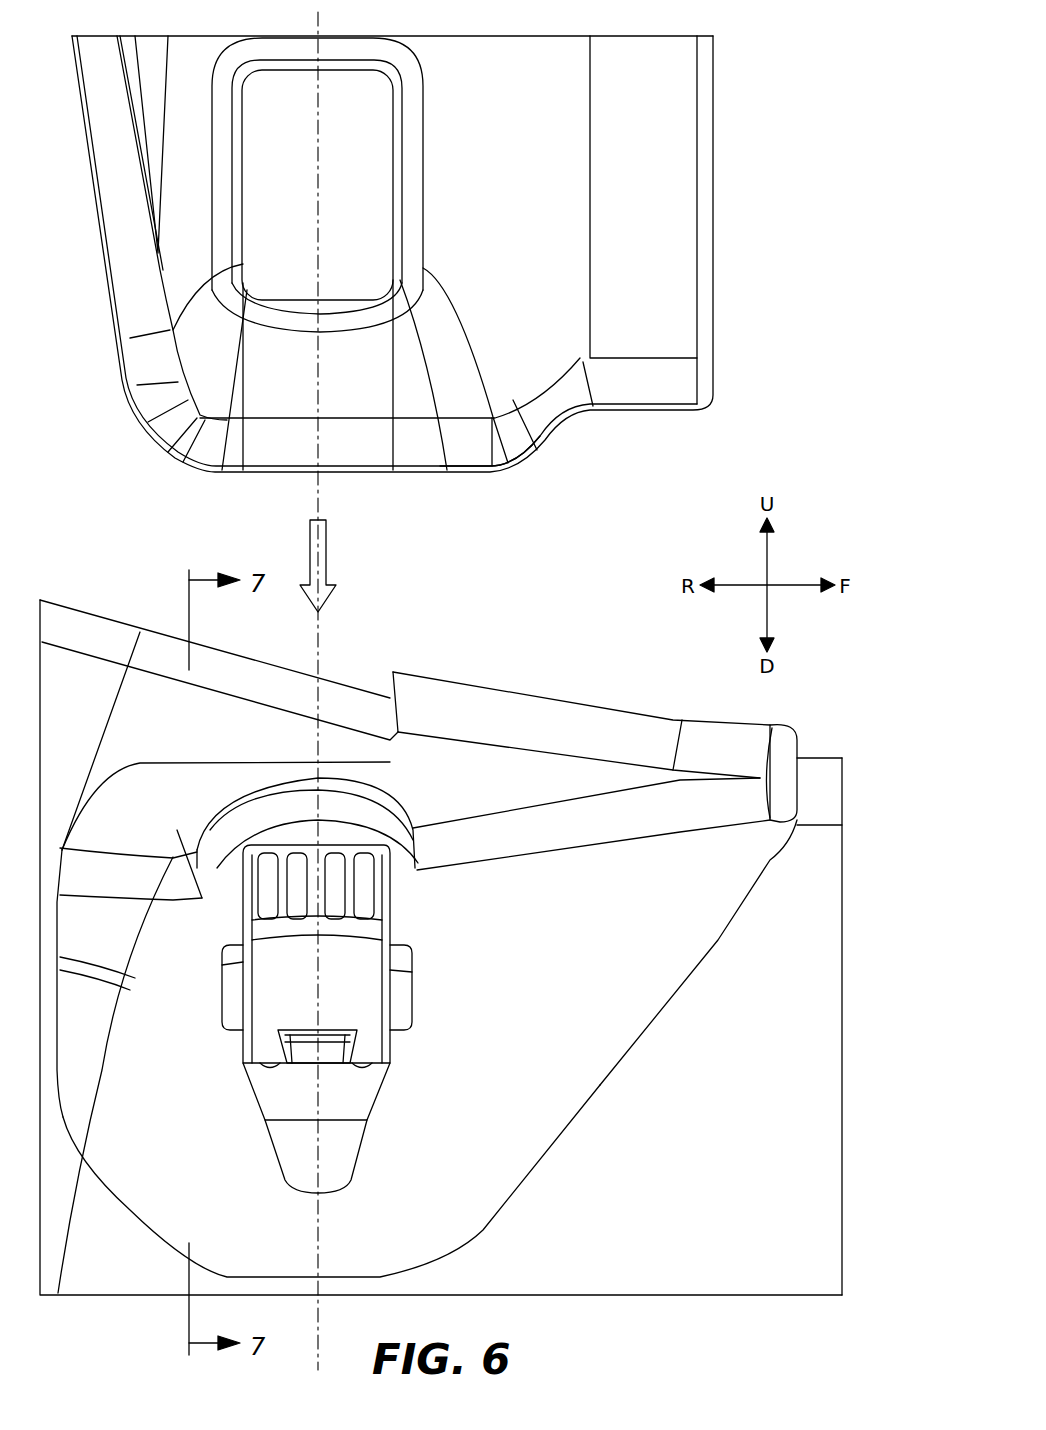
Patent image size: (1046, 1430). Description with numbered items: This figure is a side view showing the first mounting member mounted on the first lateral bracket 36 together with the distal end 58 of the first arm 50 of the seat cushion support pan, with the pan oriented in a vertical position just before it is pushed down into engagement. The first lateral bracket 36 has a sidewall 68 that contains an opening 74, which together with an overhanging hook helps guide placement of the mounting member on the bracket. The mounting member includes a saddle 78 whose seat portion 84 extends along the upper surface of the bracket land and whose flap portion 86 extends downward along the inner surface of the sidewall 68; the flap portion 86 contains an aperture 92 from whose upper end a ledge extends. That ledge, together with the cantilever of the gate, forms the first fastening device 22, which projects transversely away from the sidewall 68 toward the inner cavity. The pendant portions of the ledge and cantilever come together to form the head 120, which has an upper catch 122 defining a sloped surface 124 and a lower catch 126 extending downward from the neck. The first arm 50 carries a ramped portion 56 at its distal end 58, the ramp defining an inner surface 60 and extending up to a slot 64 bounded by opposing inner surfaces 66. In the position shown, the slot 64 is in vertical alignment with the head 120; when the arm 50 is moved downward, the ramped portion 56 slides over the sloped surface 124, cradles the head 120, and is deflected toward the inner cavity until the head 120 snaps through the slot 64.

The first fastening device 22 is at (208, 936).
The first lateral bracket 36 is at (842, 876).
The first arm 50 is at (108, 272).
The ramped portion 56 is at (260, 453).
The distal end 58 is at (462, 475).
The inner surface 60 is at (332, 388).
The slot 64 is at (320, 70).
The opposing inner surfaces 66 is at (243, 180).
The sidewall 68 is at (842, 1040).
The opening 74 is at (285, 1120).
The saddle 78 is at (697, 968).
The seat portion 84 is at (570, 705).
The flap portion 86 is at (552, 1152).
The aperture 92 is at (412, 975).
The head 120 is at (222, 965).
The upper catch 122 is at (370, 845).
The sloped surface 124 is at (318, 888).
The lower catch 126 is at (395, 1048).